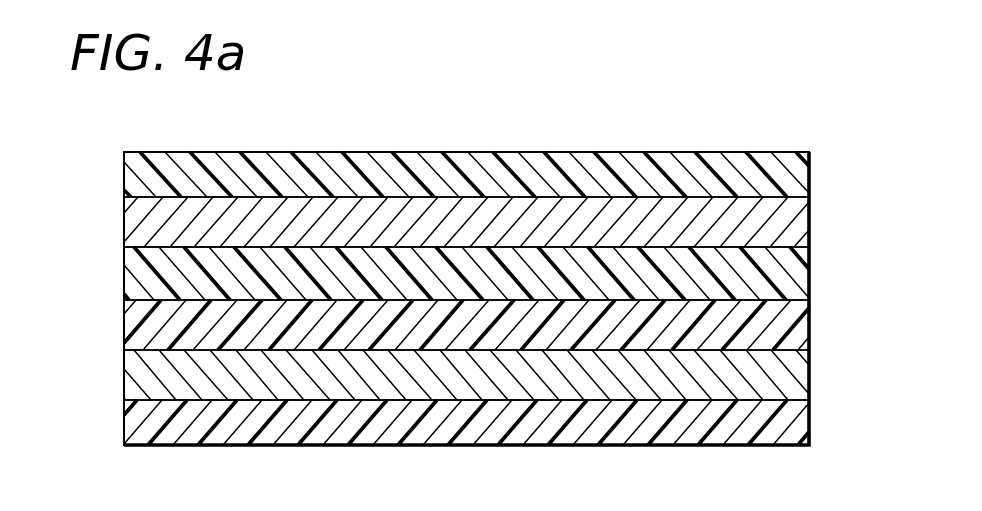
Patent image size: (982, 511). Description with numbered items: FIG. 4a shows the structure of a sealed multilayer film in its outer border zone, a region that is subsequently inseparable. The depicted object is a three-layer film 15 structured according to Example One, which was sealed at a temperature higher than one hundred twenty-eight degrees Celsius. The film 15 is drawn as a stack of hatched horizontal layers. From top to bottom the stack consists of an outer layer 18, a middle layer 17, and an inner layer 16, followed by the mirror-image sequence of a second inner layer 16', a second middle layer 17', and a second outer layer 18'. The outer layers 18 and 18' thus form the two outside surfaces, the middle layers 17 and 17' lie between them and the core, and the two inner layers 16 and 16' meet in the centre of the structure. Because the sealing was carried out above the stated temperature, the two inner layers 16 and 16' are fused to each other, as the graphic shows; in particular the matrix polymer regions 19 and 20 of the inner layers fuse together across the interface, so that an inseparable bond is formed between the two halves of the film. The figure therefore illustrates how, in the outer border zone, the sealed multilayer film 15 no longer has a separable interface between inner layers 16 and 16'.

The 3-layer film 15 is at (526, 101).
The outer layer 18 is at (433, 167).
The middle layer 17 is at (433, 222).
The inner layer 16 is at (433, 271).
The inner layer 16' is at (426, 333).
The middle layer 17' is at (424, 385).
The outer layer 18' is at (423, 434).
The matrix polymer region 19 is at (777, 278).
The matrix polymer region 20 is at (773, 320).